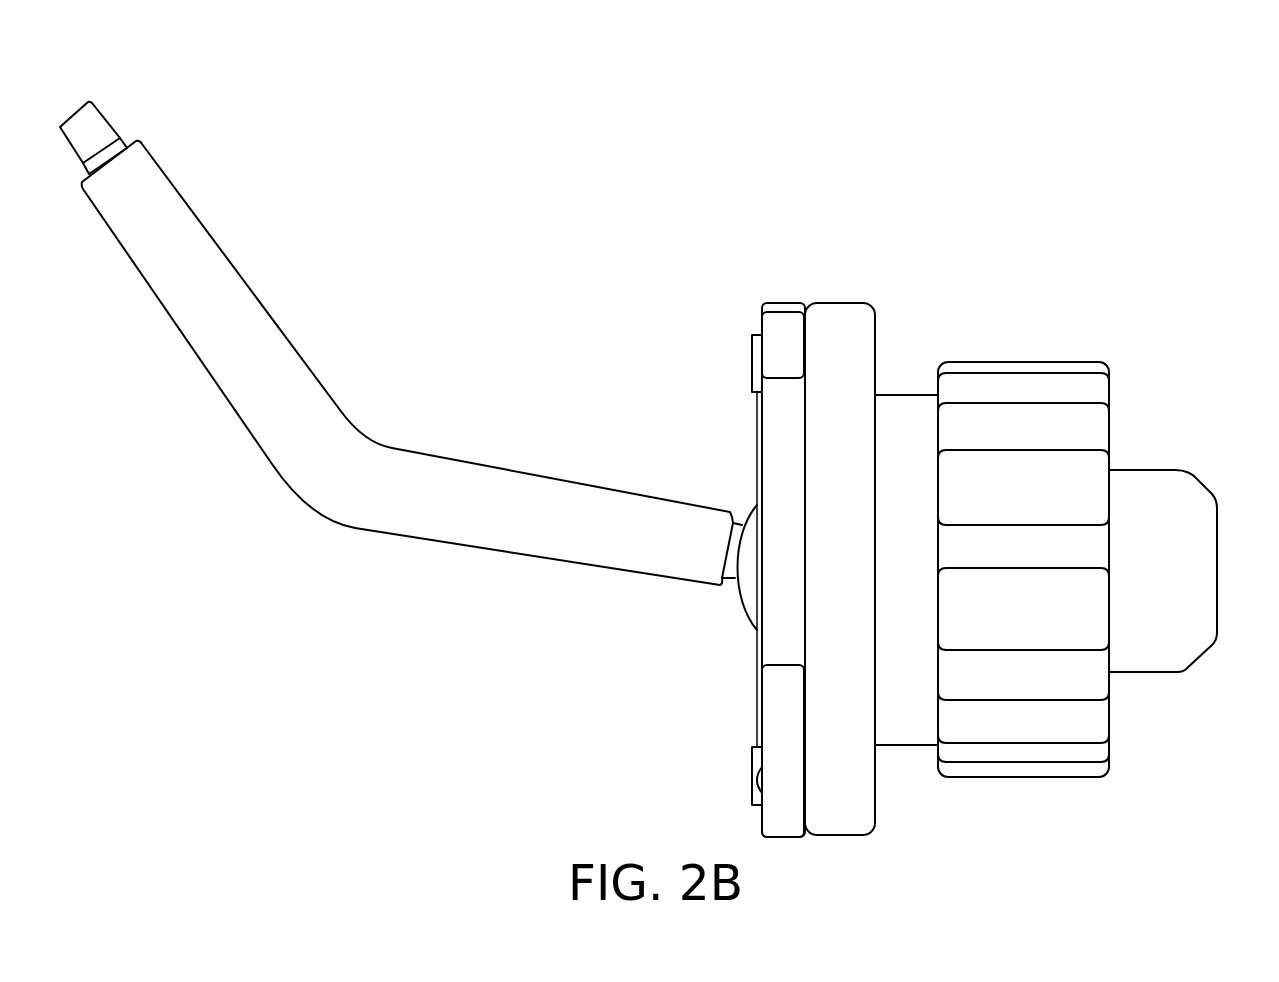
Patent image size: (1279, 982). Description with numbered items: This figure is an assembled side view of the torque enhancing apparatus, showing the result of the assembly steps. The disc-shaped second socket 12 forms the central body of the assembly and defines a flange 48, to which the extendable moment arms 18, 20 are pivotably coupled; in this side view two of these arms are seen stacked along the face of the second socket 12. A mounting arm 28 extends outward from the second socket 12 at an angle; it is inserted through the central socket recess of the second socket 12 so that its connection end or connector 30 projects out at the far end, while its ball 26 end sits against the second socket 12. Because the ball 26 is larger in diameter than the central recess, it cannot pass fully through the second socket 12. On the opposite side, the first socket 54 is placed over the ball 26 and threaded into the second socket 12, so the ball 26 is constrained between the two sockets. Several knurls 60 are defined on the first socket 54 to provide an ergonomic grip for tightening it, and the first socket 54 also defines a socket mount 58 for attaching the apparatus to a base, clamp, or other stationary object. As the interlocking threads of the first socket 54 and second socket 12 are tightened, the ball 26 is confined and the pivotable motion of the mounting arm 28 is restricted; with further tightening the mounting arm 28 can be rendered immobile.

The second socket 12 is at (828, 333).
The extendable moment arm 18 is at (777, 620).
The extendable moment arm 20 is at (770, 825).
The ball 26 is at (747, 598).
The mounting arm 28 is at (290, 390).
The connector 30 is at (95, 125).
The flange 48 is at (875, 335).
The first socket 54 is at (902, 415).
The socket mount 58 is at (1183, 513).
The knurls 60 is at (1087, 435).